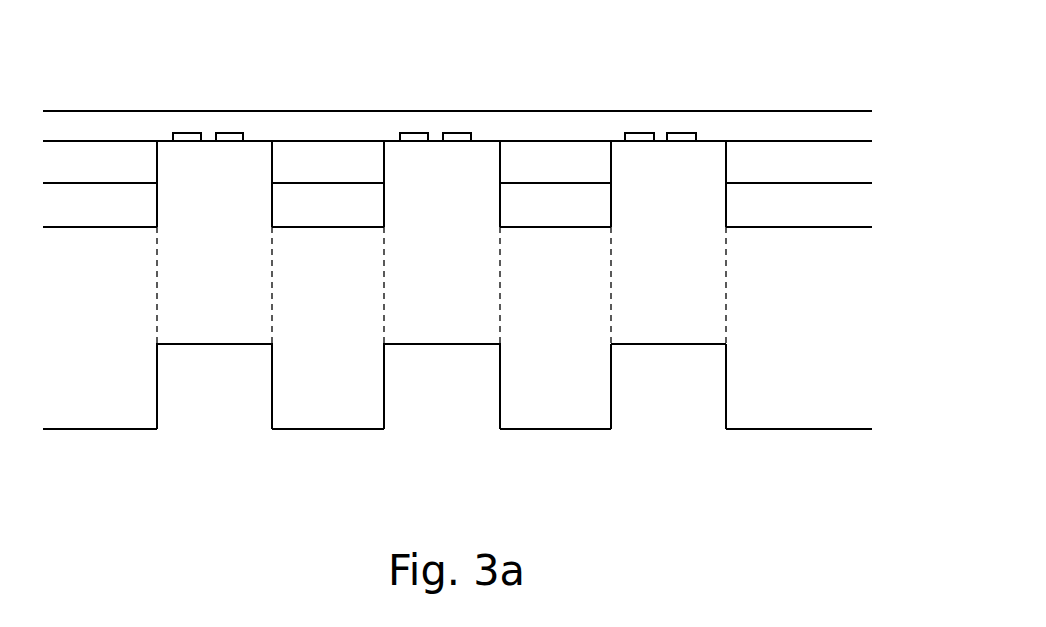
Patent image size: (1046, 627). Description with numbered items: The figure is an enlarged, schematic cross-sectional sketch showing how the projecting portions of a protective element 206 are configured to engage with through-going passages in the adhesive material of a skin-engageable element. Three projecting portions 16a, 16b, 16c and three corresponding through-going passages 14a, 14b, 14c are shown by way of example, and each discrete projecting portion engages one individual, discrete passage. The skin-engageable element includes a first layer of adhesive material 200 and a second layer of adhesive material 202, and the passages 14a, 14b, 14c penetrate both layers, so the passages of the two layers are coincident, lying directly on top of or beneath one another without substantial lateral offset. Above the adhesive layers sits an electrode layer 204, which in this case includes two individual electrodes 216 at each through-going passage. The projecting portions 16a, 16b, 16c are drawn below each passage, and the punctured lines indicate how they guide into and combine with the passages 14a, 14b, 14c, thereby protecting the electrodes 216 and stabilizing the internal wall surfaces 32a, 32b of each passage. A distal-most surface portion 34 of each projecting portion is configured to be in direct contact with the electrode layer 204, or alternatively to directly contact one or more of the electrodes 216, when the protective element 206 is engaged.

The through-going passage 14a is at (253, 162).
The through-going passage 14b is at (478, 165).
The through-going passage 14c is at (703, 168).
The projecting portion 16a is at (203, 379).
The projecting portion 16b is at (442, 375).
The projecting portion 16c is at (665, 370).
The internal wall surface 32a is at (158, 213).
The internal wall surface 32b is at (270, 198).
The distal-most surface portion 34 is at (692, 343).
The first layer of adhesive material 200 is at (842, 203).
The second layer of adhesive material 202 is at (838, 165).
The electrode layer 204 is at (807, 120).
The protective element 206 is at (808, 430).
The electrodes 216 is at (230, 133).